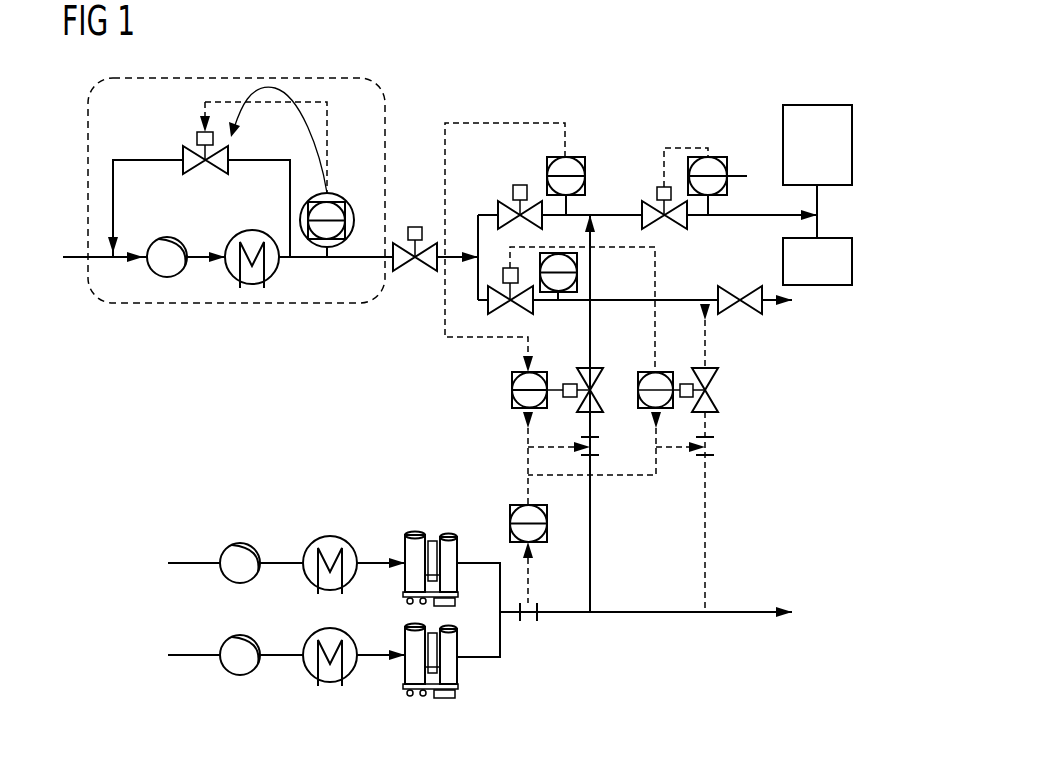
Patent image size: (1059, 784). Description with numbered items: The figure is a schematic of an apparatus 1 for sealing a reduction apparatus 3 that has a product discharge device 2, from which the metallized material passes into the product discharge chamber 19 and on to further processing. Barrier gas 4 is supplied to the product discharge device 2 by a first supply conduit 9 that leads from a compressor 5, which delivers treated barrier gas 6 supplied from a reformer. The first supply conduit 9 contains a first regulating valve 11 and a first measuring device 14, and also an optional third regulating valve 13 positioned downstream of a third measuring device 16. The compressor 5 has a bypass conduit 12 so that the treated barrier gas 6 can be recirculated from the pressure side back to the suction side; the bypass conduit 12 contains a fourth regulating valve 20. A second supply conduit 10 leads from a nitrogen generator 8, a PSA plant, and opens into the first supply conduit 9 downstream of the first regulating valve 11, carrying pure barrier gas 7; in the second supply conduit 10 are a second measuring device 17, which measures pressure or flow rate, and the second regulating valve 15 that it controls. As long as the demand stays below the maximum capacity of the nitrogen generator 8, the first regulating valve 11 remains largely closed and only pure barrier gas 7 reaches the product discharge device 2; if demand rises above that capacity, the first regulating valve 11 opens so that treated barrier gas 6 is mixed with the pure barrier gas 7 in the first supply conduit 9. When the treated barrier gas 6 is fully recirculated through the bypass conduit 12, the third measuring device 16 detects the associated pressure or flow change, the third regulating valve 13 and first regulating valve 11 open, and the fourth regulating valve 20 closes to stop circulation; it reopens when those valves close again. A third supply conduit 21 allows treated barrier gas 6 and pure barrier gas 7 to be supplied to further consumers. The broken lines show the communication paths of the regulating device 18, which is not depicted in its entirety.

The apparatus 1 is at (529, 88).
The product discharge device 2 is at (819, 204).
The reduction apparatus 3 is at (783, 147).
The barrier gas 4 is at (629, 213).
The compressor 5 is at (179, 240).
The treated barrier gas 6 is at (74, 255).
The pure barrier gas 7 is at (593, 350).
The nitrogen generator 8 is at (400, 512).
The first supply conduit 9 is at (362, 255).
The second supply conduit 10 is at (592, 282).
The first regulating valve 11 is at (518, 184).
The bypass conduit 12 is at (144, 158).
The third regulating valve 13 is at (417, 226).
The first measuring device 14 is at (570, 157).
The second regulating valve 15 is at (616, 418).
The third measuring device 16 is at (332, 182).
The second measuring device 17 is at (510, 520).
The regulating device 18 is at (338, 194).
The product discharge chamber 19 is at (783, 262).
The fourth regulating valve 20 is at (184, 152).
The third supply conduit 21 is at (683, 299).